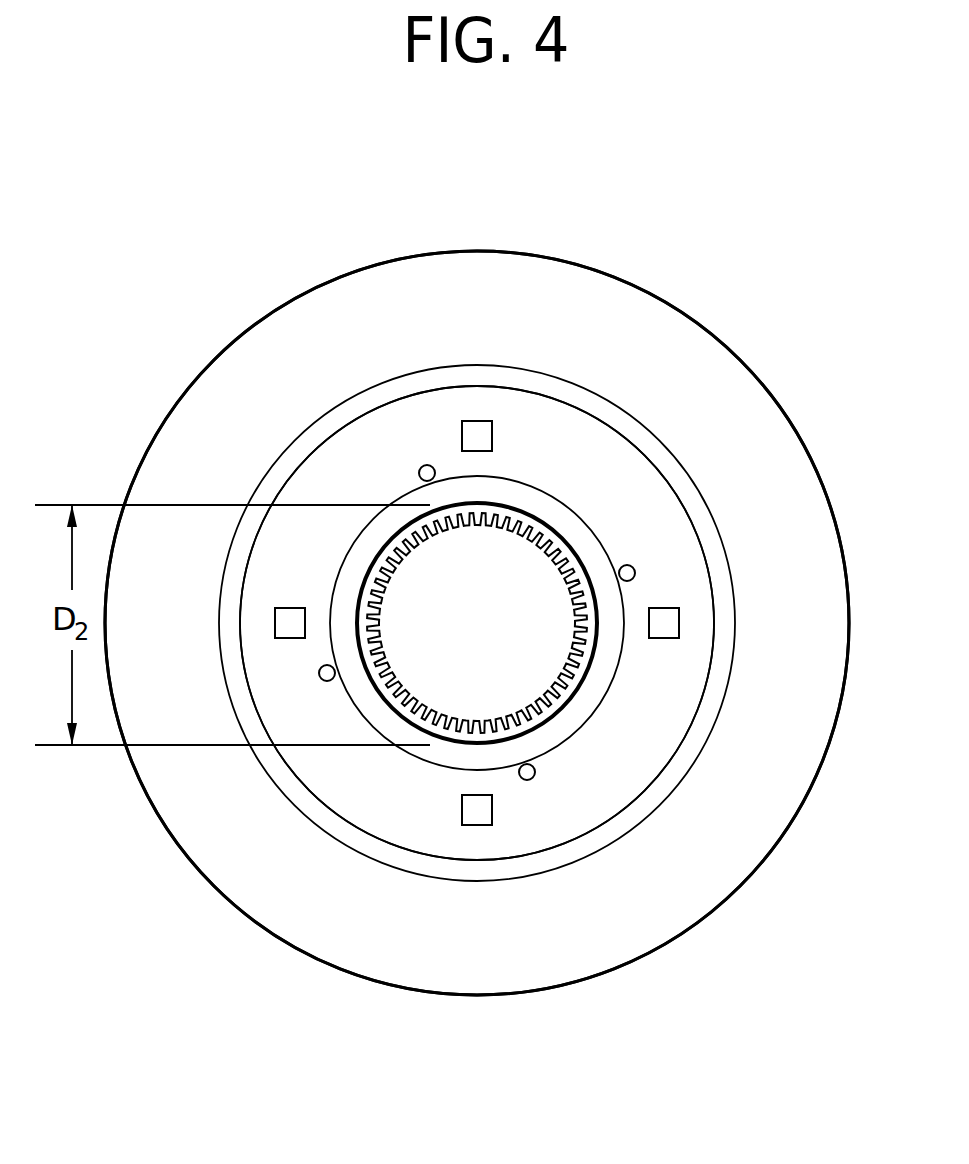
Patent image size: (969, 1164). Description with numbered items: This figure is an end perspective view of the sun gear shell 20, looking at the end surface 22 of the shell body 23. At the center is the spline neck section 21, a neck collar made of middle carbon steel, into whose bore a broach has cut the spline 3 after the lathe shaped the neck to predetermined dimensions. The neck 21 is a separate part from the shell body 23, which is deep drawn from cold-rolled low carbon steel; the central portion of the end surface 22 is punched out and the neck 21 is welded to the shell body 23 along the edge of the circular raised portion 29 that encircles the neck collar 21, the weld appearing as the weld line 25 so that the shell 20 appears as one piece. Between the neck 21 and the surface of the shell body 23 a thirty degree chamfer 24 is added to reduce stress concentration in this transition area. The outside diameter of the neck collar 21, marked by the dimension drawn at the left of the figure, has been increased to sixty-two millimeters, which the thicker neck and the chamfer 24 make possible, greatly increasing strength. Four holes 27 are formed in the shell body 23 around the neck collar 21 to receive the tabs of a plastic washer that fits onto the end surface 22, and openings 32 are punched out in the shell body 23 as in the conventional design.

The sun gear shell 20 is at (597, 217).
The spline neck section 21 is at (583, 563).
The end surface 22 is at (740, 402).
The shell body 23 is at (660, 297).
The chamfer 24 is at (605, 665).
The weld line 25 is at (720, 718).
The holes 27 is at (535, 778).
The circular raised portion 29 is at (370, 435).
The openings 32 is at (477, 825).
The spline 3 is at (380, 577).